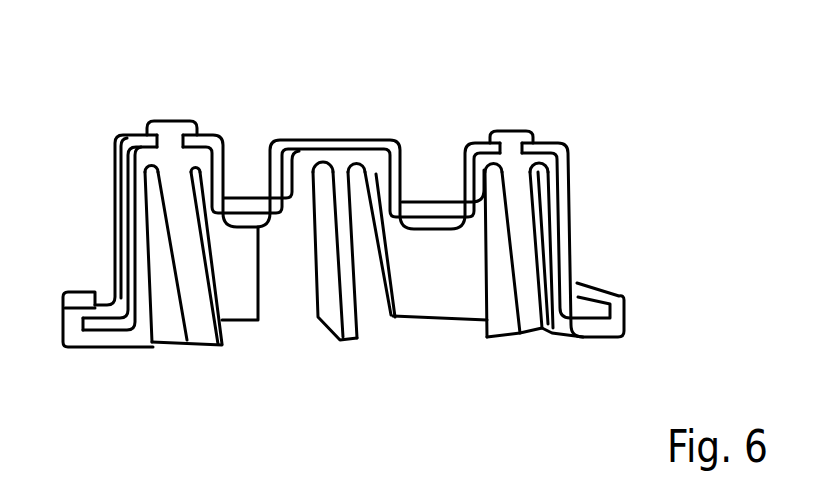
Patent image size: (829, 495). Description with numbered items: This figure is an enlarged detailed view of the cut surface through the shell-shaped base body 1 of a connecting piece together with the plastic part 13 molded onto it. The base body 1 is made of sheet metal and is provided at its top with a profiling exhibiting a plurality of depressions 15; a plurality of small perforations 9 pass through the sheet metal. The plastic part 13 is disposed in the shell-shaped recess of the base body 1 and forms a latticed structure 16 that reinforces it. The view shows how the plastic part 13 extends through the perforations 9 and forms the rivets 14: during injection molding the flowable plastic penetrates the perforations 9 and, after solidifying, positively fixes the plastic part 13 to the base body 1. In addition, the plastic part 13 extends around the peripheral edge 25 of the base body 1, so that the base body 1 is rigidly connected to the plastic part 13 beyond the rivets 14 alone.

The base body 1 is at (567, 215).
The perforations 9 is at (170, 143).
The plastic part 13 is at (203, 323).
The rivets 14 is at (173, 130).
The depressions 15 is at (253, 203).
The latticed structure 16 is at (427, 300).
The peripheral edge 25 is at (112, 287).